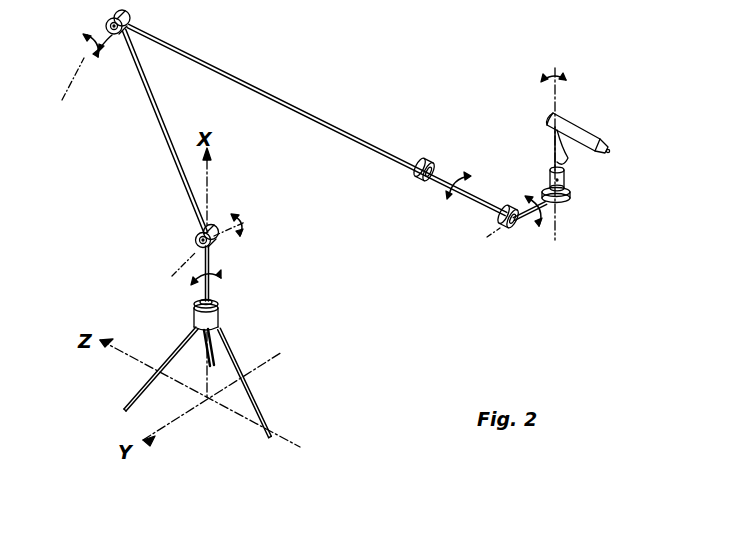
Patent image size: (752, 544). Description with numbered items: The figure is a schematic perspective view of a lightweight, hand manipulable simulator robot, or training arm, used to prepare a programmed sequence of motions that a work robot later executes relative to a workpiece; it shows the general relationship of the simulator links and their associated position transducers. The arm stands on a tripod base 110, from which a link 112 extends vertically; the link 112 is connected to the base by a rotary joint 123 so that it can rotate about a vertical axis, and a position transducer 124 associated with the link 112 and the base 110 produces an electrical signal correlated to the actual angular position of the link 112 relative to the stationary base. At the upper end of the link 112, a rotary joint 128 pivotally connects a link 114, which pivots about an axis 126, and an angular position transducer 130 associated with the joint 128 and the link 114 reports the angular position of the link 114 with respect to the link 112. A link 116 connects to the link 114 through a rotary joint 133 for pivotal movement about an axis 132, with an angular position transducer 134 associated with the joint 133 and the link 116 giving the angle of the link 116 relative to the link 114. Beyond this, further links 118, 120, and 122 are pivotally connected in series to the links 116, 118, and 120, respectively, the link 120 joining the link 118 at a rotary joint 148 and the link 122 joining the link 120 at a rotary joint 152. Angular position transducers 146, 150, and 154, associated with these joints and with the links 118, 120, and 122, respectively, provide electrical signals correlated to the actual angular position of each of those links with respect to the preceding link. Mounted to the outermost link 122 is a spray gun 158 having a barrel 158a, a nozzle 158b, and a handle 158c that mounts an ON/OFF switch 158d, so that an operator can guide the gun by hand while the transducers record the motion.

The tripod base 110 is at (232, 354).
The link 112 is at (210, 262).
The link 114 is at (148, 126).
The link 116 is at (312, 82).
The link 118 is at (481, 201).
The link 120 is at (556, 212).
The link 122 is at (567, 178).
The rotary joint 123 is at (220, 316).
The position transducer 124 is at (241, 287).
The axis 126 is at (166, 270).
The rotary joint 128 is at (207, 230).
The angular position transducer 130 is at (195, 240).
The axis 132 is at (74, 77).
The rotary joint 133 is at (131, 21).
The angular position transducer 134 is at (118, 40).
The angular position transducer 146 is at (430, 182).
The rotary joint 148 is at (522, 226).
The angular position transducer 150 is at (505, 229).
The rotary joint 152 is at (566, 200).
The angular position transducer 154 is at (570, 192).
The spray gun 158 is at (591, 111).
The barrel 158a is at (577, 130).
The nozzle 158b is at (609, 149).
The handle 158c is at (550, 132).
The ON/OFF switch 158d is at (560, 160).